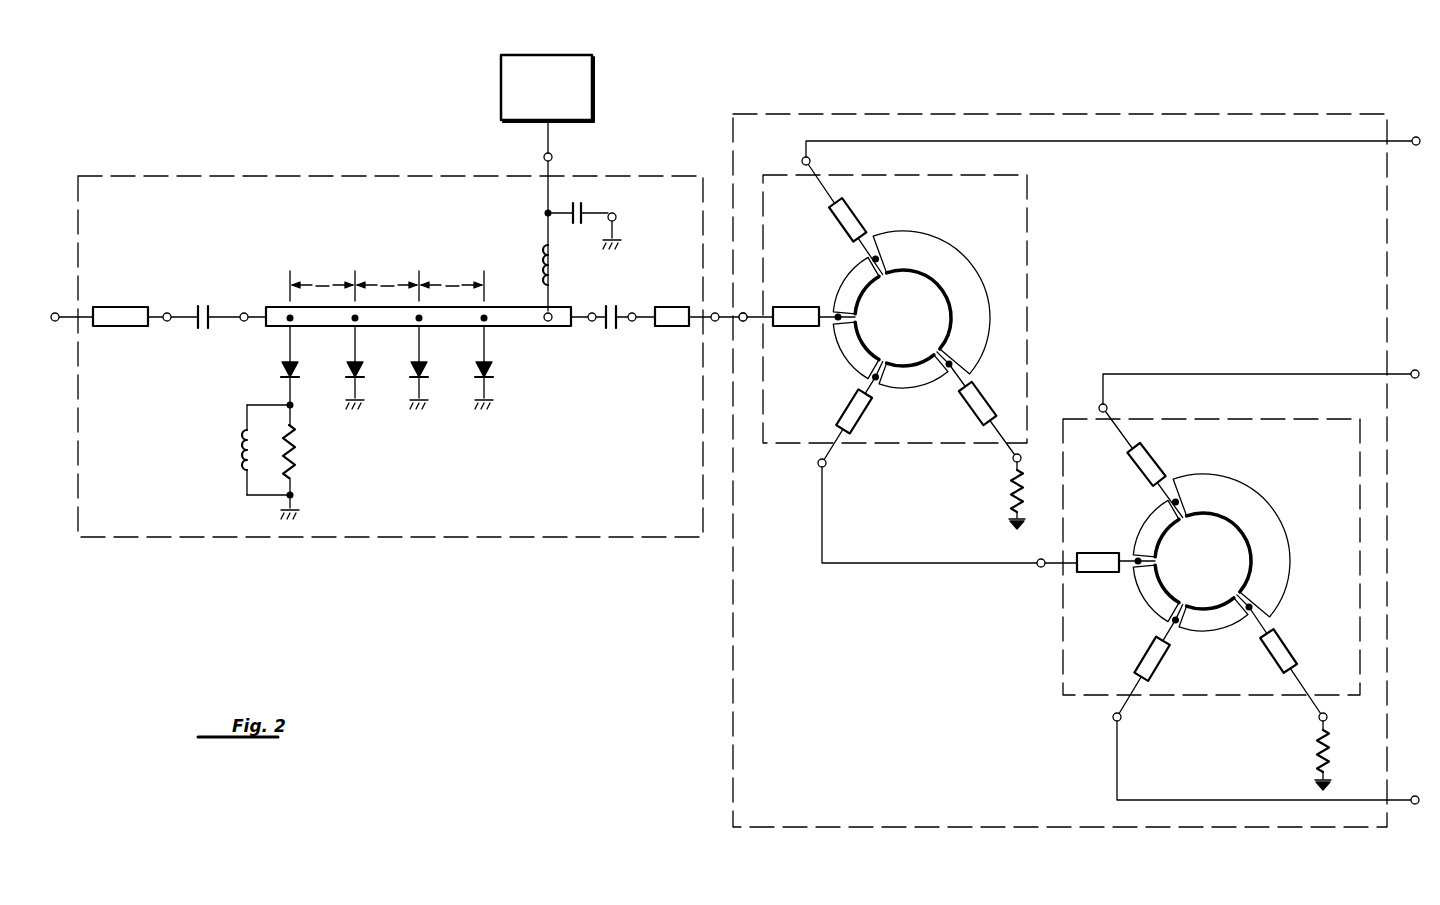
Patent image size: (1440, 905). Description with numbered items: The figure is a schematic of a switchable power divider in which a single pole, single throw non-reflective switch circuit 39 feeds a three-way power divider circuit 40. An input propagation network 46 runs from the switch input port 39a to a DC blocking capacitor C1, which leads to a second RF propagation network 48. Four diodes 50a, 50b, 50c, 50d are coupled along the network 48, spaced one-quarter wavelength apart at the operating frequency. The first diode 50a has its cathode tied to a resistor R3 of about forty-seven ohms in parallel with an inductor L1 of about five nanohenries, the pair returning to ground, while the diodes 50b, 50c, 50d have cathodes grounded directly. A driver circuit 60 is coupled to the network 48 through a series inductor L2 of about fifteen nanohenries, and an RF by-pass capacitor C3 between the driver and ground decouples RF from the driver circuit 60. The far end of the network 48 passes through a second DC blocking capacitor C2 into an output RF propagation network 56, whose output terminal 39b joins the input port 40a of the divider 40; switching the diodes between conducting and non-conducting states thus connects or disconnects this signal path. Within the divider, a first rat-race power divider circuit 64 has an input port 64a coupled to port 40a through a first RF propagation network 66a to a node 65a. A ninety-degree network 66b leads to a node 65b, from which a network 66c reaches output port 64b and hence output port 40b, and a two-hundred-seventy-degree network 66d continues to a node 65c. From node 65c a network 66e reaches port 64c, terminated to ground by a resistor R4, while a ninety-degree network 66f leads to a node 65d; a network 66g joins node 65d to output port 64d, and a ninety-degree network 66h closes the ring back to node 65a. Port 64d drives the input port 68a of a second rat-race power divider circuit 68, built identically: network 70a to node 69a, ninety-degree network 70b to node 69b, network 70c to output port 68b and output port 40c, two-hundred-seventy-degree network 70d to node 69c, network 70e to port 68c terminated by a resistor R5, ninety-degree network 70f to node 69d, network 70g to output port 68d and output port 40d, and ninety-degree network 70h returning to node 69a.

The switch circuit 39 is at (203, 162).
The input port 39a is at (66, 303).
The output terminal 39b is at (715, 322).
The input propagation network 46 is at (108, 307).
The second RF propagation network 48 is at (271, 307).
The first diode 50a is at (294, 370).
The diode 50b is at (359, 370).
The diode 50c is at (423, 370).
The diode 50d is at (488, 370).
The DC blocking capacitor C1 is at (205, 328).
The second DC blocking capacitor C2 is at (613, 328).
The RF by-pass capacitor C3 is at (577, 203).
The inductor L1 is at (243, 449).
The series inductor L2 is at (545, 258).
The resistor R3 is at (297, 447).
The output RF propagation network 56 is at (671, 307).
The driver circuit 60 is at (594, 85).
The three-way power divider circuit 40 is at (975, 112).
The input port 40a is at (743, 312).
The output port 40b is at (1412, 136).
The output port 40c is at (1410, 370).
The output port 40d is at (1410, 797).
The first rat-race power divider circuit 64 is at (1028, 225).
The input port 64a is at (746, 323).
The output port 64b is at (801, 161).
The output port 64c is at (1012, 459).
The output port 64d is at (817, 463).
The node 65a is at (843, 317).
The second node 65b is at (883, 278).
The node 65c is at (947, 360).
The node 65d is at (878, 373).
The first RF propagation network 66a is at (800, 318).
The second RF propagation network 66b is at (846, 275).
The third RF propagation network 66c is at (848, 214).
The fourth RF propagation network 66d is at (943, 250).
The fifth RF propagation network 66e is at (979, 410).
The sixth RF propagation network 66f is at (915, 386).
The seventh RF propagation network 66g is at (858, 414).
The eighth RF propagation network 66h is at (846, 353).
The resistor R4 is at (1010, 496).
The second rat-race power divider circuit 68 is at (1220, 418).
The input port 68a is at (1041, 568).
The output port 68b is at (1099, 408).
The output port 68c is at (1328, 717).
The output port 68d is at (1112, 717).
The node 69a is at (1143, 561).
The second node 69b is at (1181, 521).
The node 69c is at (1247, 603).
The node 69d is at (1180, 603).
The first RF propagation network 70a is at (1103, 565).
The second RF propagation network 70b is at (1144, 520).
The third RF propagation network 70c is at (1148, 460).
The fourth RF propagation network 70d is at (1258, 508).
The fifth RF propagation network 70e is at (1276, 656).
The sixth RF propagation network 70f is at (1212, 630).
The seventh RF propagation network 70g is at (1157, 664).
The eighth RF propagation network 70h is at (1146, 612).
The resistor R5 is at (1317, 758).